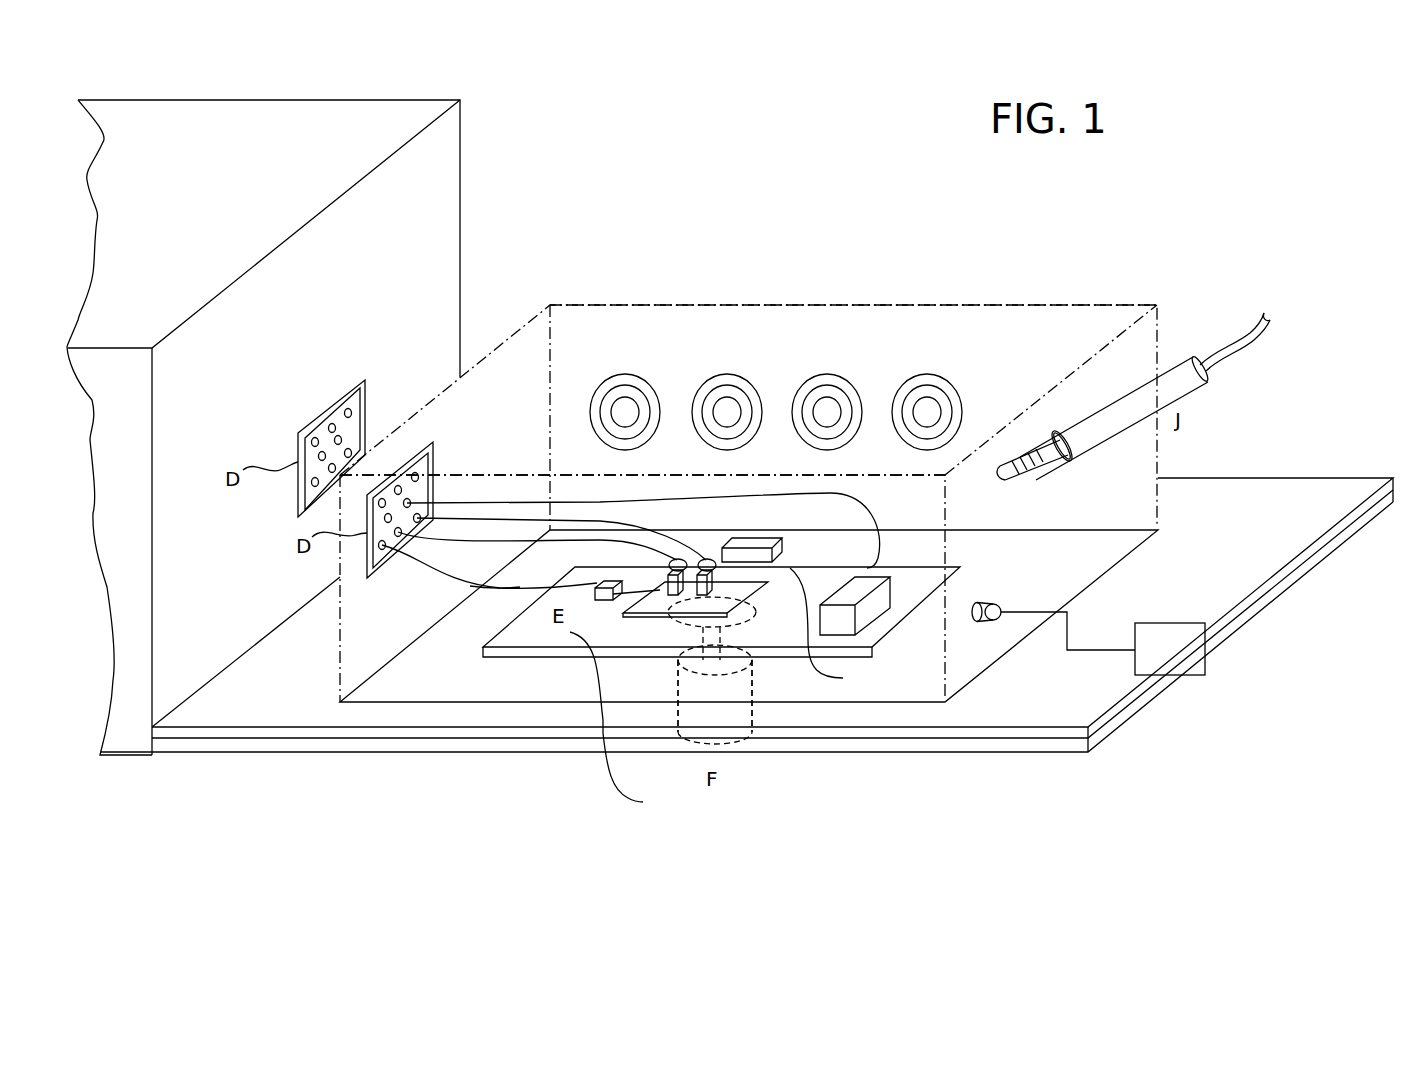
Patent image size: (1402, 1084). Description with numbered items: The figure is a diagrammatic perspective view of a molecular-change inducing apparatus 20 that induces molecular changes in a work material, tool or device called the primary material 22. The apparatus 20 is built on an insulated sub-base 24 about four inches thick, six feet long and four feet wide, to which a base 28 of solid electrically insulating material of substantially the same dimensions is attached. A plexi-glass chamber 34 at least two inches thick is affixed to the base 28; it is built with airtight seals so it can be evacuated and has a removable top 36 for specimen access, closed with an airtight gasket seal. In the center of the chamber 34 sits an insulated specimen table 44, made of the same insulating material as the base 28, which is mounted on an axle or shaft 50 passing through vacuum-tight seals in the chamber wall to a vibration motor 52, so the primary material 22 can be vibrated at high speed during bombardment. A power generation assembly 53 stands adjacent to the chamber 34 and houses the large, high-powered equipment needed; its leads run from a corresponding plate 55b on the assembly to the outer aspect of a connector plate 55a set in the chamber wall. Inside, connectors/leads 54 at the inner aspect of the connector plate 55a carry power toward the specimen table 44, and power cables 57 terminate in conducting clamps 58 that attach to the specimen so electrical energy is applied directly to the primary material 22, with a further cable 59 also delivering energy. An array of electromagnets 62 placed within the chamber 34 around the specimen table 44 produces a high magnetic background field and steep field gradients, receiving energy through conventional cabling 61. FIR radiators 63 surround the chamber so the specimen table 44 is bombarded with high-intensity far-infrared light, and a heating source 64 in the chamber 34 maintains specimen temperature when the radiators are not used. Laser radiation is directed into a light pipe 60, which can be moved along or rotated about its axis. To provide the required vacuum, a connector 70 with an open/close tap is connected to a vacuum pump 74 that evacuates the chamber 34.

The molecular-change inducing apparatus 20 is at (967, 263).
The primary material 22 is at (757, 585).
The insulated sub-base 24 is at (833, 743).
The base 28 is at (905, 732).
The plexi-glass chamber 34 is at (668, 305).
The removable top 36 is at (843, 327).
The insulated specimen table 44 is at (620, 724).
The axle or shaft 50 is at (753, 668).
The vibration motor 52 is at (733, 715).
The power generation assembly 53 is at (370, 313).
The connectors/leads 54 is at (520, 578).
The connector plate 55a is at (433, 445).
The corresponding plate 55b is at (365, 408).
The power cables 57 is at (507, 587).
The conducting clamps 58 is at (604, 600).
The cable 59 is at (430, 538).
The light pipe 60 is at (1038, 462).
The cabling 61 is at (858, 493).
The electromagnets 62 is at (893, 593).
The FIR radiators 63 is at (628, 375).
The heating source 64 is at (782, 548).
The connector 70 is at (980, 622).
The vacuum pump 74 is at (1163, 663).